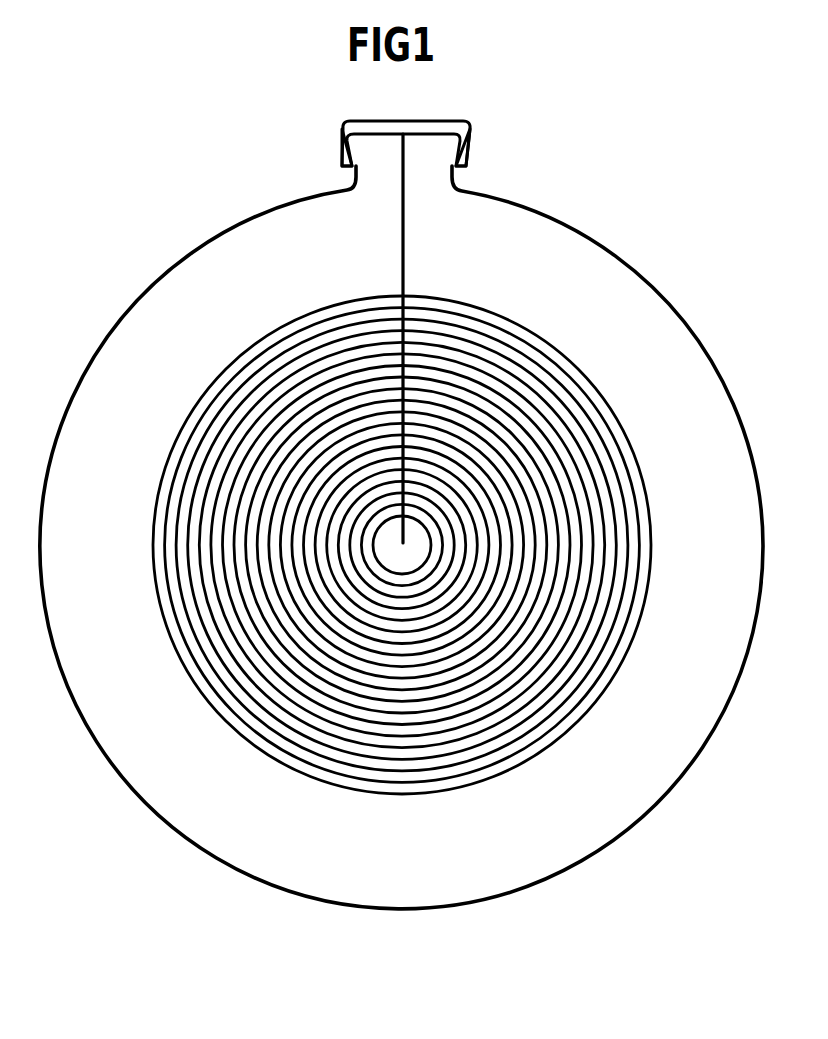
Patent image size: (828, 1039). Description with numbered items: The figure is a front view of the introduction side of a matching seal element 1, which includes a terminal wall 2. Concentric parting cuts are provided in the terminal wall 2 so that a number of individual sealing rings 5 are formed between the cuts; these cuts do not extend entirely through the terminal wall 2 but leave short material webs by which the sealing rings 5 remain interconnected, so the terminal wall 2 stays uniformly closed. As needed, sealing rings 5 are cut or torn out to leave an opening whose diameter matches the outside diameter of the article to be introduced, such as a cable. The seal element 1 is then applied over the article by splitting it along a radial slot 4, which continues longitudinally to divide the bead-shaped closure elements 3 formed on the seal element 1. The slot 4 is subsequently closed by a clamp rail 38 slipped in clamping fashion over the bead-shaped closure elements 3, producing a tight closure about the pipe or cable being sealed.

The matching seal element 1 is at (138, 275).
The terminal wall 2 is at (657, 330).
The bead-shaped closure elements 3 is at (375, 152).
The clamp rail 38 is at (430, 128).
The radial slot 4 is at (404, 268).
The sealing rings 5 is at (603, 438).